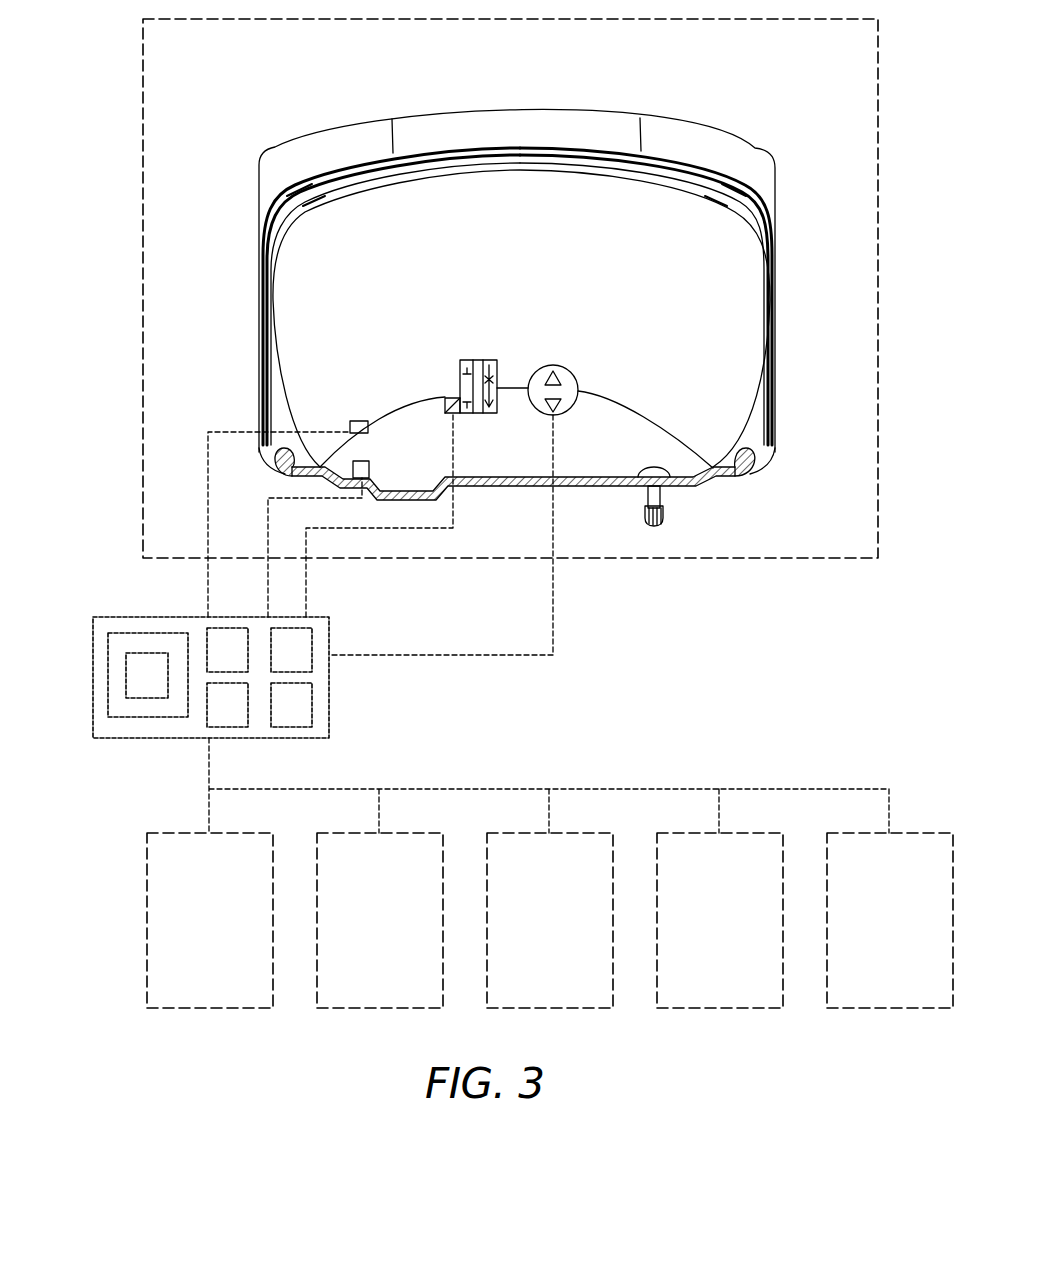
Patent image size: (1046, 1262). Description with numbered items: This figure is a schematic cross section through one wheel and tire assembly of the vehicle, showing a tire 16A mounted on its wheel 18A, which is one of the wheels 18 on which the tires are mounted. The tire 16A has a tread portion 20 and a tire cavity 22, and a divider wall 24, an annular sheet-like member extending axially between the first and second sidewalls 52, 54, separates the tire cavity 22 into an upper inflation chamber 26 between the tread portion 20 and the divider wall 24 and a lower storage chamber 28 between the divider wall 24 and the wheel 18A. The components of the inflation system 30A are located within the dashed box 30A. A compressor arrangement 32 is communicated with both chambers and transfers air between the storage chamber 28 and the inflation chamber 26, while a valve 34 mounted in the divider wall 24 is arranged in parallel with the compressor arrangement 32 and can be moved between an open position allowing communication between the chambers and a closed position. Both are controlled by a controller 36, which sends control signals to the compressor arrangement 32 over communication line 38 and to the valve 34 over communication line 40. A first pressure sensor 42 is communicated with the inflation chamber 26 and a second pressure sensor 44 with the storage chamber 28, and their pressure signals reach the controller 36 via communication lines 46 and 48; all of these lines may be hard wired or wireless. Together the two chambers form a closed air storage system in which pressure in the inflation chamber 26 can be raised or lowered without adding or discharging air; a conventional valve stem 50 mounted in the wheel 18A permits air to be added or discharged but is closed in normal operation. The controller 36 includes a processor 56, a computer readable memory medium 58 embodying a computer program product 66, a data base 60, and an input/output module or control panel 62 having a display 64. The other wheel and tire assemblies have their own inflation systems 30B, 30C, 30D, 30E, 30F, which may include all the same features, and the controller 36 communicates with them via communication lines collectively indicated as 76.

The first front tire 16A is at (548, 259).
The wheel 18 is at (528, 494).
The wheel 18A is at (685, 488).
The tread portion 20 is at (607, 118).
The tire cavity 22 is at (523, 307).
The divider wall 24 is at (600, 402).
The inflation chamber 26 is at (460, 299).
The storage chamber 28 is at (622, 464).
The inflation system 30A is at (878, 258).
The inflation system 30B is at (232, 934).
The inflation system 30C is at (402, 934).
The inflation system 30D is at (572, 934).
The inflation system 30E is at (742, 934).
The inflation system 30F is at (912, 934).
The compressor arrangement 32 is at (570, 370).
The valve 34 is at (460, 383).
The controller 36 is at (220, 677).
The communication line 38 is at (468, 660).
The communication line 40 is at (455, 513).
The first pressure sensor 42 is at (355, 421).
The second pressure sensor 44 is at (366, 462).
The communication line 46 is at (208, 482).
The communication line 48 is at (268, 524).
The valve stem 50 is at (648, 503).
The first sidewall 52 is at (258, 310).
The second sidewall 54 is at (778, 302).
The processor 56 is at (241, 668).
The computer readable memory medium 58 is at (305, 668).
The data base 60 is at (241, 723).
The input/output module 62 is at (115, 672).
The display 64 is at (126, 676).
The computer program product 66 is at (305, 723).
The communication lines 76 is at (345, 789).